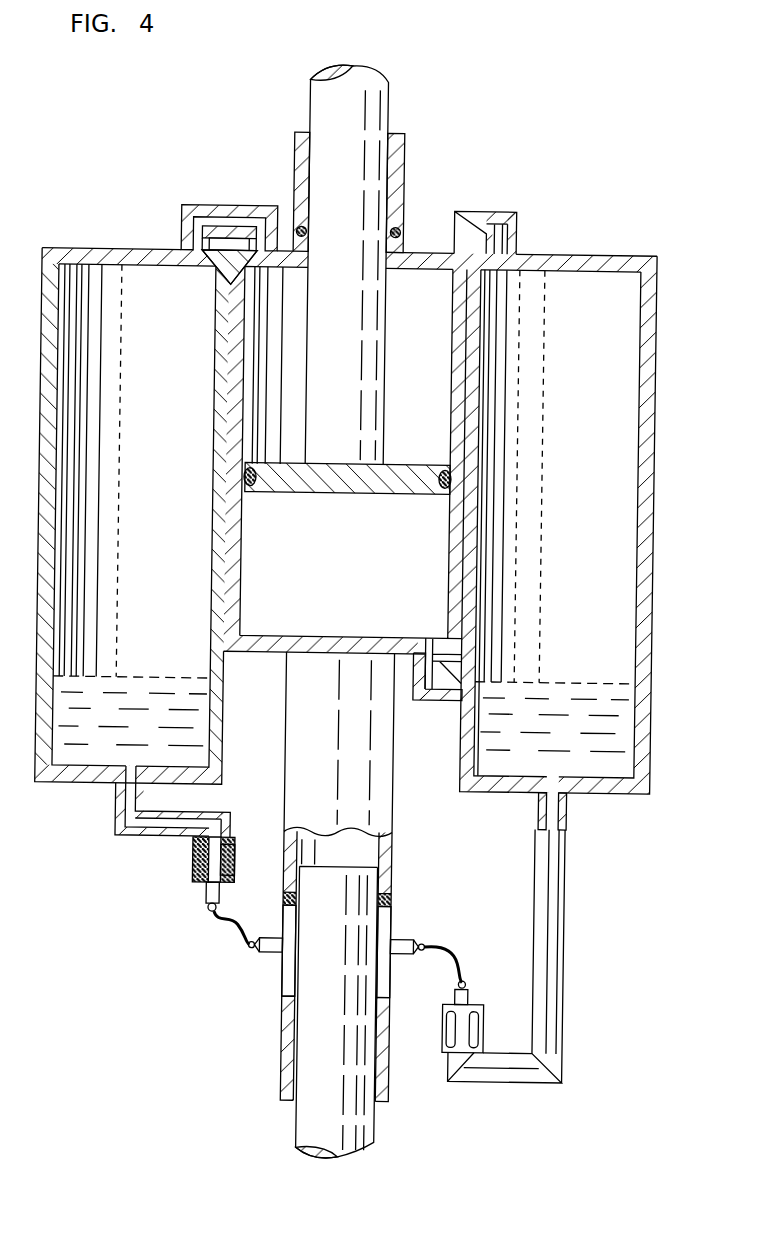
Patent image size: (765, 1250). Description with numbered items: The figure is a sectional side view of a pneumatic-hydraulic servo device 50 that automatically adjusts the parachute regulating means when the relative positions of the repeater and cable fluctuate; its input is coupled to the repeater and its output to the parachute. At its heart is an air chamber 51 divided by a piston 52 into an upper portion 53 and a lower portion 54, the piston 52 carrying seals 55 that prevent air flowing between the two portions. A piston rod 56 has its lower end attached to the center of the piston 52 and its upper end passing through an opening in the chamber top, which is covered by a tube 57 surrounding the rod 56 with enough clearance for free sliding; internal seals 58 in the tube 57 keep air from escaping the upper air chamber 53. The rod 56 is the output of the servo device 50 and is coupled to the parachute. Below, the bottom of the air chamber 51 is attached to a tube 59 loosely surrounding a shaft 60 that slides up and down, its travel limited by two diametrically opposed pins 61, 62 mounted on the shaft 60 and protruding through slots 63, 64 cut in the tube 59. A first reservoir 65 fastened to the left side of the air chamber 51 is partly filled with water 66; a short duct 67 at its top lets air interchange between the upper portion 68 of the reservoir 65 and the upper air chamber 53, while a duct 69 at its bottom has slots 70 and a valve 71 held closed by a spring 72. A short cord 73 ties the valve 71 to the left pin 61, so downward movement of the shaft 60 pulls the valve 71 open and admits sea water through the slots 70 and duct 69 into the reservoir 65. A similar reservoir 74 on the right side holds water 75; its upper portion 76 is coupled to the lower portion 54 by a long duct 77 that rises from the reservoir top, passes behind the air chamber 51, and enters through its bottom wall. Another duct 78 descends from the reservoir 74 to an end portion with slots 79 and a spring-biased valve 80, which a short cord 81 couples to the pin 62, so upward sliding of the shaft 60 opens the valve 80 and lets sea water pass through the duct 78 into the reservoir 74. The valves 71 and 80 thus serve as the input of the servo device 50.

The pneumatic-hydraulic servo device 50 is at (562, 146).
The air chamber 51 is at (261, 654).
The piston 52 is at (330, 494).
The upper portion of the air chamber 53 is at (423, 393).
The lower portion of the air chamber 54 is at (371, 602).
The seals 55 is at (443, 487).
The piston rod 56 is at (382, 92).
The tube 57 is at (399, 171).
The internal seals 58 is at (395, 231).
The tube 59 is at (288, 756).
The shaft 60 is at (302, 1127).
The pin 61 is at (267, 939).
The pin 62 is at (405, 939).
The slot 63 is at (289, 977).
The slot 64 is at (394, 977).
The first reservoir 65 is at (142, 252).
The water 66 is at (128, 733).
The short duct 67 is at (232, 208).
The upper portion of the reservoir 68 is at (171, 390).
The duct 69 is at (118, 822).
The slots 70 is at (196, 868).
The valve 71 is at (210, 892).
The spring 72 is at (238, 871).
The short cord 73 is at (237, 931).
The reservoir 74 is at (563, 252).
The water 75 is at (566, 737).
The upper portion of the reservoir 76 is at (601, 391).
The long duct 77 is at (474, 210).
The duct 78 is at (570, 988).
The slots 79 is at (448, 1029).
The spring-biased valve 80 is at (475, 994).
The short cord 81 is at (450, 951).